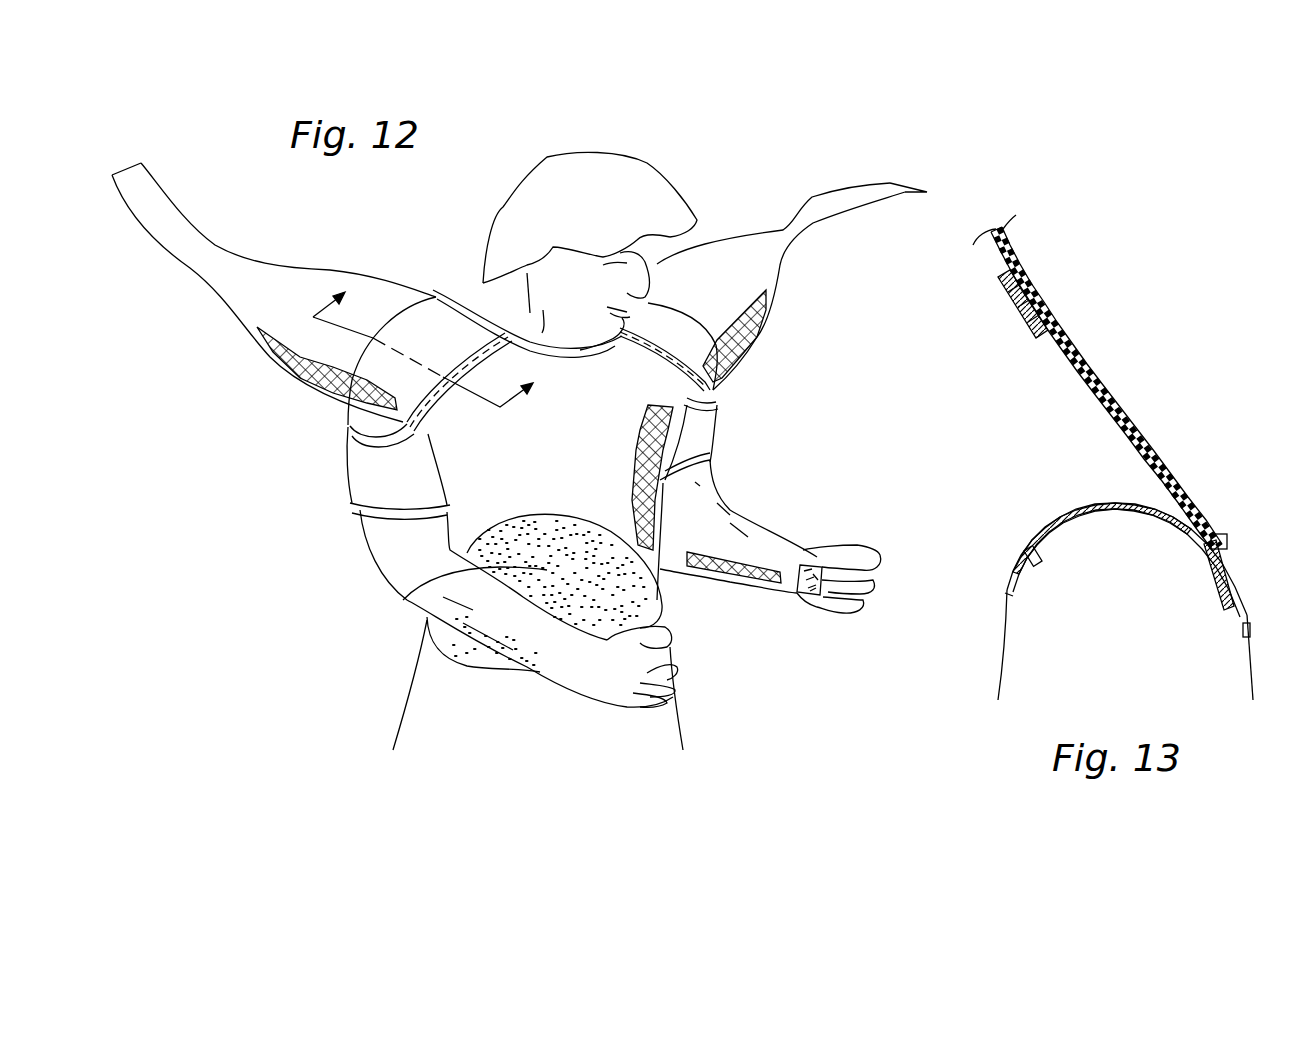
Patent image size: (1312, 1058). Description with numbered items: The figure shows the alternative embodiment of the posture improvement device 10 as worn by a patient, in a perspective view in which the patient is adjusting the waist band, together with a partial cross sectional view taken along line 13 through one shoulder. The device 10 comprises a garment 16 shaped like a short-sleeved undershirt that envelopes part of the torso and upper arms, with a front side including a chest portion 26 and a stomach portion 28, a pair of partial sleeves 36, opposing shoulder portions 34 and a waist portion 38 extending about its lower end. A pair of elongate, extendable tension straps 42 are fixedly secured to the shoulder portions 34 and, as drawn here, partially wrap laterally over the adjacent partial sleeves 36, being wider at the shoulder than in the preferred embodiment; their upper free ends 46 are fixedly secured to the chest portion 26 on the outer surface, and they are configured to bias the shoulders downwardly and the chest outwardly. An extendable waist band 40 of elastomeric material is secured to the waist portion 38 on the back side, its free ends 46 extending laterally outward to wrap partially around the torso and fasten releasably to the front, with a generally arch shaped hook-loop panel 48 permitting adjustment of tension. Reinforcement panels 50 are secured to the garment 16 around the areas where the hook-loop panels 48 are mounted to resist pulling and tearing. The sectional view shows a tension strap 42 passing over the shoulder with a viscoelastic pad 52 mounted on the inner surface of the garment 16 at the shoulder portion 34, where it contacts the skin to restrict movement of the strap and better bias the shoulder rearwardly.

In FIG. 12, the posture improvement device 10 is at (745, 185).
In FIG. 12, the section line 13- 13 is at (429, 342).
In FIG. 13, the garment 16 is at (1252, 668).
In FIG. 12, the chest portion 26 is at (573, 450).
In FIG. 12, the stomach portion 28 is at (717, 522).
In FIG. 12, the shoulder portions 34 is at (290, 373).
In FIG. 13, the shoulder portions 34 is at (1008, 620).
In FIG. 12, the partial sleeves 36 is at (357, 478).
In FIG. 12, the waist portion 38 is at (418, 657).
In FIG. 12, the waist band 40 is at (731, 578).
In FIG. 12, the tension straps 42 is at (265, 263).
In FIG. 13, the tension straps 42 is at (1130, 423).
In FIG. 12, the free ends 46 is at (120, 168).
In FIG. 12, the hook-loop panel 48 is at (790, 594).
In FIG. 13, the hook-loop panel 48 is at (1018, 307).
In FIG. 12, the reinforcement panels 50 is at (357, 421).
In FIG. 13, the reinforcement panels 50 is at (1240, 577).
In FIG. 13, the viscoelastic pads 52 is at (1212, 572).